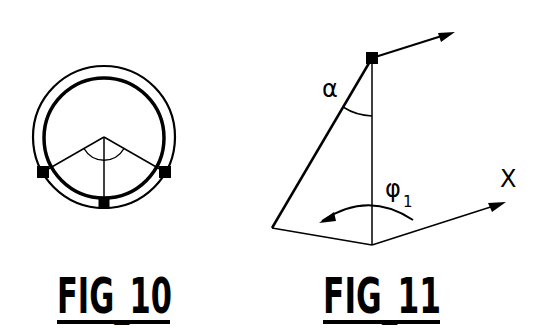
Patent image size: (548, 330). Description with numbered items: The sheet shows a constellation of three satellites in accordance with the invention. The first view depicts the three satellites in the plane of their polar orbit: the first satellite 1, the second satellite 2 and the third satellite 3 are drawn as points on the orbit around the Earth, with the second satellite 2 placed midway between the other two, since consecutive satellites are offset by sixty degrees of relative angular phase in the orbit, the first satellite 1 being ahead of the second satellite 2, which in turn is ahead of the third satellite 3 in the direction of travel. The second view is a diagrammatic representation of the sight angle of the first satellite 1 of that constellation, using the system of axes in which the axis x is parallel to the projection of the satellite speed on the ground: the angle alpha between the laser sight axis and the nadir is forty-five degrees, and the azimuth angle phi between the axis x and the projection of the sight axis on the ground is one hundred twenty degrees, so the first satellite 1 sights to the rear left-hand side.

In FIG. 10, the first satellite 1 is at (37, 184).
In FIG. 11, the first satellite 1 is at (364, 45).
In FIG. 10, the second satellite 2 is at (102, 217).
In FIG. 10, the third satellite 3 is at (174, 181).